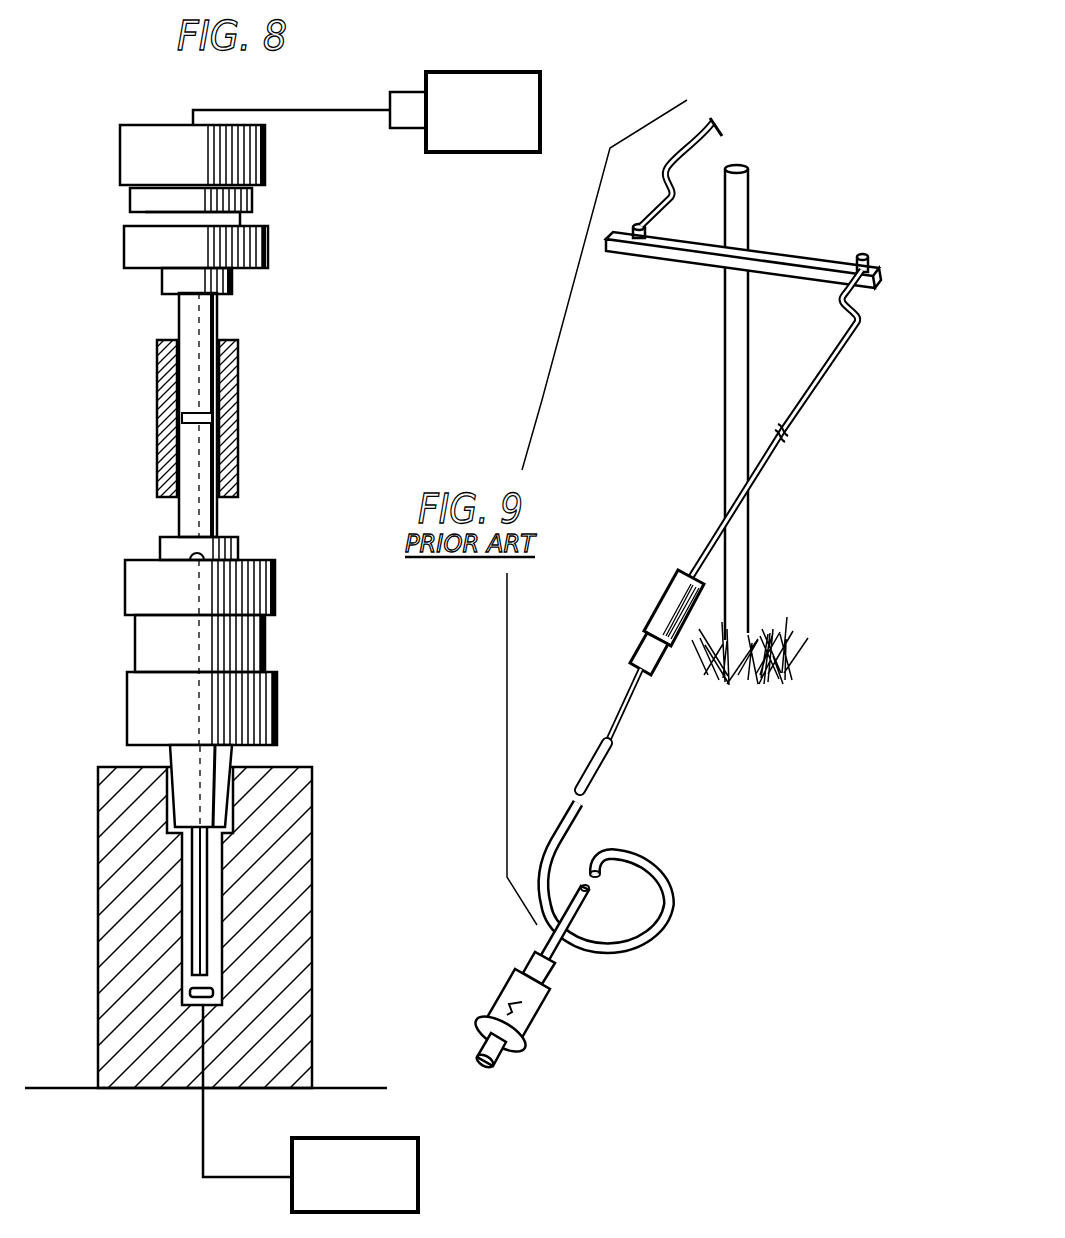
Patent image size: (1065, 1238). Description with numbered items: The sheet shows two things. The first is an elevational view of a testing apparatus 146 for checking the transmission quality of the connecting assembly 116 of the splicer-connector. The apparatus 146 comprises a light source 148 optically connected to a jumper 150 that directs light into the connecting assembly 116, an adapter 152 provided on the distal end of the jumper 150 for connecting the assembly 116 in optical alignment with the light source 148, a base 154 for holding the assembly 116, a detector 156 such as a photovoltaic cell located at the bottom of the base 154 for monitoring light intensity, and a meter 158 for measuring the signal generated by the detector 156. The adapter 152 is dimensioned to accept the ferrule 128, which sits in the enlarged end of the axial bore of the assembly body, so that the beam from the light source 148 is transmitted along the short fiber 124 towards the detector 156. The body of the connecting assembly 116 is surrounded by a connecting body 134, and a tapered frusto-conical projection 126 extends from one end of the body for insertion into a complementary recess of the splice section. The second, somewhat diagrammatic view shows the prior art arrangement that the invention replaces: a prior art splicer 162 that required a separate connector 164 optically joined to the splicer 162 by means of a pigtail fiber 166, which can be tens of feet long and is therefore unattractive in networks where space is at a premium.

In FIG. 8, the connecting assembly 116 is at (276, 697).
In FIG. 8, the short fiber 124 is at (205, 960).
In FIG. 8, the frusto-conical projection 126 is at (205, 790).
In FIG. 8, the ferrule 128 is at (190, 512).
In FIG. 8, the connecting body 134 is at (127, 705).
In FIG. 8, the testing apparatus 146 is at (98, 152).
In FIG. 8, the light source 148 is at (540, 100).
In FIG. 8, the jumper 150 is at (128, 194).
In FIG. 8, the adapter 152 is at (238, 416).
In FIG. 8, the base 154 is at (118, 802).
In FIG. 8, the detector 156 is at (190, 994).
In FIG. 8, the meter 158 is at (418, 1180).
In FIG. 9, the prior art splicer 162 is at (683, 630).
In FIG. 9, the connector 164 is at (540, 1028).
In FIG. 9, the pigtail fiber 166 is at (672, 900).